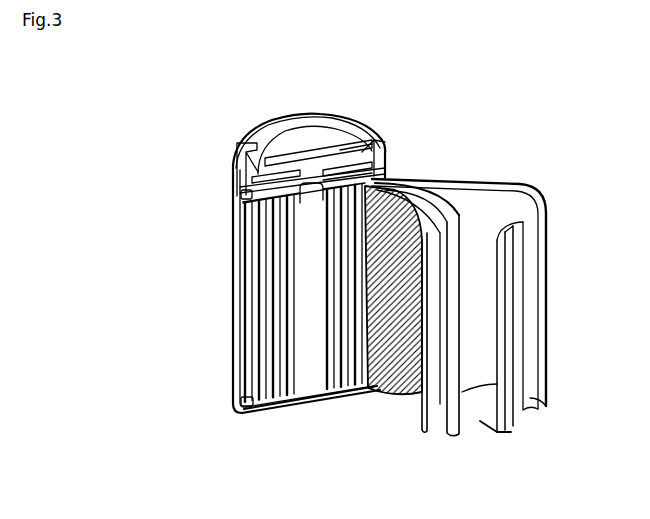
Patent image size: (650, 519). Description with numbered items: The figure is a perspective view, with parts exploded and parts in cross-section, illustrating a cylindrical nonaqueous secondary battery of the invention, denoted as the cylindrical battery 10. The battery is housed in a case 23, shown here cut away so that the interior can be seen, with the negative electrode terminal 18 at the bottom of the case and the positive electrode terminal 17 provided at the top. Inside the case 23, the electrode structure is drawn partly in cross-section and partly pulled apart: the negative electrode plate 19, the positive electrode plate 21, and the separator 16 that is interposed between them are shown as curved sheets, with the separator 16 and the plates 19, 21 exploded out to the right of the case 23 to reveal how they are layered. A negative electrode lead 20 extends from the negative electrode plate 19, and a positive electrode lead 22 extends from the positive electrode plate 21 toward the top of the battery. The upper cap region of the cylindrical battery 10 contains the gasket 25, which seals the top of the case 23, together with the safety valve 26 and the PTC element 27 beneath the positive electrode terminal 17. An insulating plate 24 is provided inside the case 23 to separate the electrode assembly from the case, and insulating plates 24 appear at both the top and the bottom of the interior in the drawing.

The cylindrical battery 10 is at (402, 136).
The separator 16 is at (460, 206).
The positive electrode terminal 17 is at (288, 141).
The negative electrode terminal 18 is at (273, 416).
The negative electrode plate 19 is at (516, 273).
The negative electrode lead 20 is at (507, 353).
The positive electrode plate 21 is at (430, 419).
The positive electrode lead 22 is at (383, 171).
The case 23 is at (233, 293).
The insulating plate 24 is at (250, 195).
The gasket 25 is at (237, 141).
The safety valve 26 is at (305, 152).
The PTC element 27 is at (342, 137).